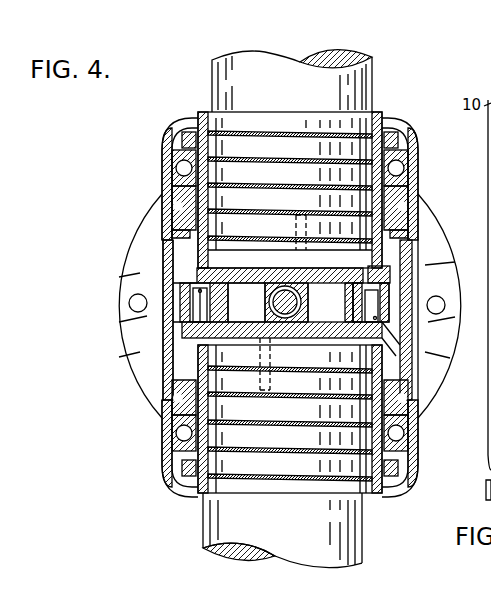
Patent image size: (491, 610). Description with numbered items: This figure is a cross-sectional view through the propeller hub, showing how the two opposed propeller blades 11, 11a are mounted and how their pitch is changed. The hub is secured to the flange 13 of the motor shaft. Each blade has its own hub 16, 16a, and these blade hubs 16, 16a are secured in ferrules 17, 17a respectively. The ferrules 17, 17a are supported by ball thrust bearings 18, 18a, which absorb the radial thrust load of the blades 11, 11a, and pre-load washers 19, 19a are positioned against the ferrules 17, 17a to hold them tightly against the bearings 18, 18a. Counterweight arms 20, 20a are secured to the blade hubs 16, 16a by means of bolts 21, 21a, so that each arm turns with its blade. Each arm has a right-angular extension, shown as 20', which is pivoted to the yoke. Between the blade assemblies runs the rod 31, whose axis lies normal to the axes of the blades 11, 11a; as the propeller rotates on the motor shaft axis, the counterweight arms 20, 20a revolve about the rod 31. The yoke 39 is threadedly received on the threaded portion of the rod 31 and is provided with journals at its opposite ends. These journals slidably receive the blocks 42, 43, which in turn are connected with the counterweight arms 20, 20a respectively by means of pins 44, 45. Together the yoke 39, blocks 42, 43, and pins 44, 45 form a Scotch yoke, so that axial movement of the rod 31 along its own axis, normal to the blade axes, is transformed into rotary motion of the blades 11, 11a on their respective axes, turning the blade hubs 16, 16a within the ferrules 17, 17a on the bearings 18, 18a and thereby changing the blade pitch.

The propeller blade 11 is at (240, 68).
The propeller blade 11a is at (295, 538).
The flange 13 is at (420, 207).
The hub 16 is at (250, 122).
The hub 16a is at (240, 492).
The ferrule 17 is at (183, 174).
The ferrule 17a is at (178, 438).
The ball thrust bearing 18 is at (190, 140).
The ball thrust bearing 18a is at (185, 478).
The pre-load washer 19 is at (165, 240).
The pre-load washer 19a is at (165, 392).
The counterweight arm 20 is at (199, 288).
The right angular extension 20' is at (307, 287).
The counterweight arm 20a is at (302, 310).
The bolt 21 is at (292, 232).
The bolt 21a is at (180, 347).
The rod 31 is at (385, 340).
The yoke 39 is at (388, 266).
The block 42 is at (393, 303).
The block 43 is at (188, 300).
The pin 44 is at (392, 316).
The pin 45 is at (192, 318).